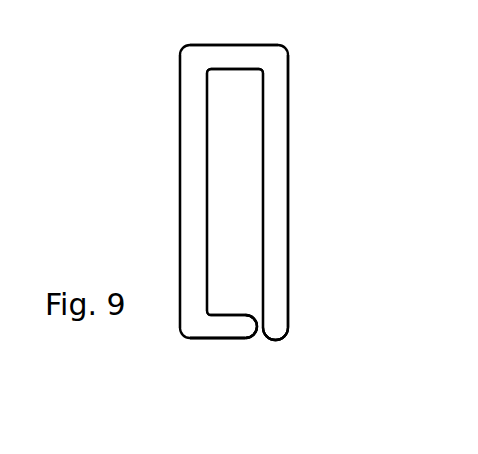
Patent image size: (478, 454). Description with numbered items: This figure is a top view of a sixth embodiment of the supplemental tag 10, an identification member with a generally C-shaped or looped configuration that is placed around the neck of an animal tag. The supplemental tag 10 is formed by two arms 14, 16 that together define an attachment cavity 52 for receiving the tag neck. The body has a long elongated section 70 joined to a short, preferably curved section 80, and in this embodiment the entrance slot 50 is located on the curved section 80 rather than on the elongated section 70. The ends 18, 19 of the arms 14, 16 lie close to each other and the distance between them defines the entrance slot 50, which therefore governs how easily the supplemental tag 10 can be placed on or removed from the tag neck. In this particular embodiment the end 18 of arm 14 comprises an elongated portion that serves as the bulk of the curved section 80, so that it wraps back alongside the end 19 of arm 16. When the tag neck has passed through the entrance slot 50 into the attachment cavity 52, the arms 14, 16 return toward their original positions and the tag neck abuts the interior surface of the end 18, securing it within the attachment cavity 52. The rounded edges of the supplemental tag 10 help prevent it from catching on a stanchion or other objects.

The supplemental tag 10 is at (180, 47).
The arm 14 is at (220, 338).
The arm 16 is at (288, 222).
The end of arm 18 is at (250, 338).
The end of arm 19 is at (285, 337).
The entrance slot 50 is at (252, 312).
The attachment cavity 52 is at (243, 223).
The elongated section 70 is at (180, 128).
The curved section 80 is at (242, 45).